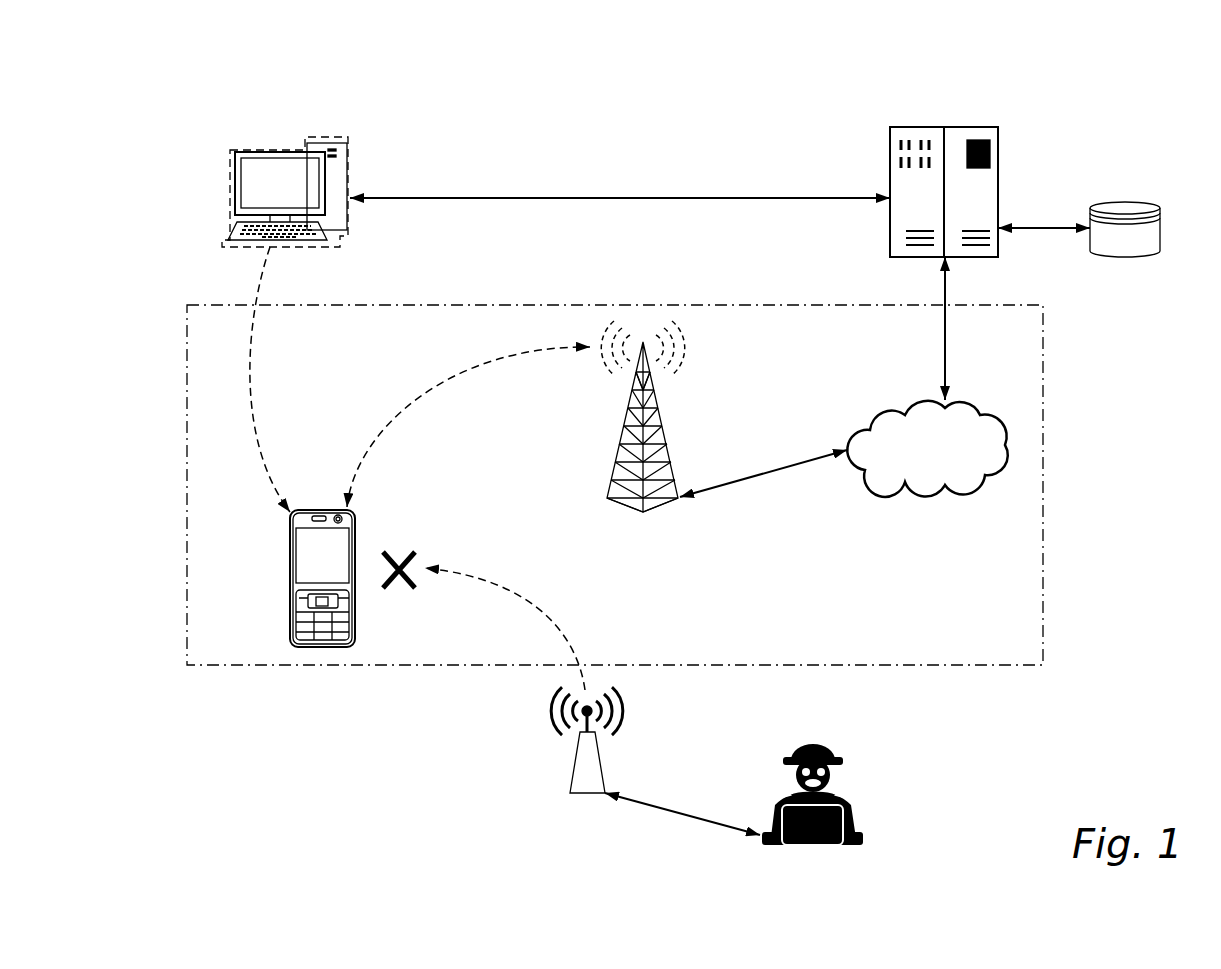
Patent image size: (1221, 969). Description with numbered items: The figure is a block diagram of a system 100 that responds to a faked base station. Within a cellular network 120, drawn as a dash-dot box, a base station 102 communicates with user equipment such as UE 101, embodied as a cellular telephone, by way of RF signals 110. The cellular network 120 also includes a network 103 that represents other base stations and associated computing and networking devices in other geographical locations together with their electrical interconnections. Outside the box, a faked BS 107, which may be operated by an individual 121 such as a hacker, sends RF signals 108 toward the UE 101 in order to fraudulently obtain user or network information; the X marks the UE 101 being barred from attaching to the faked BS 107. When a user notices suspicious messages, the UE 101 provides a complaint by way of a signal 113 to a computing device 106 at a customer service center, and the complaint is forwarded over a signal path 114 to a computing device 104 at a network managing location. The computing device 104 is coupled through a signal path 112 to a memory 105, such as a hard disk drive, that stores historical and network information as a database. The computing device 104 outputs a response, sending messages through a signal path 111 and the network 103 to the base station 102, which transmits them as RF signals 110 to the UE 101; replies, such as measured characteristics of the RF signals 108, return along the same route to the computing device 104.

The system 100 is at (370, 60).
The UE 101 is at (290, 558).
The BS 102 is at (622, 420).
The network 103 is at (927, 449).
The computing device 104 is at (890, 150).
The memory 105 is at (1160, 222).
The computing device 106 is at (232, 150).
The faked BS 107 is at (572, 783).
The RF signals 108 is at (563, 632).
The RF signals 110 is at (430, 396).
The signal path 111 is at (943, 356).
The signal path 112 is at (1040, 226).
The signal 113 is at (255, 434).
The signal path 114 is at (585, 196).
The cellular network 120 is at (1045, 380).
The individual 121 is at (846, 770).